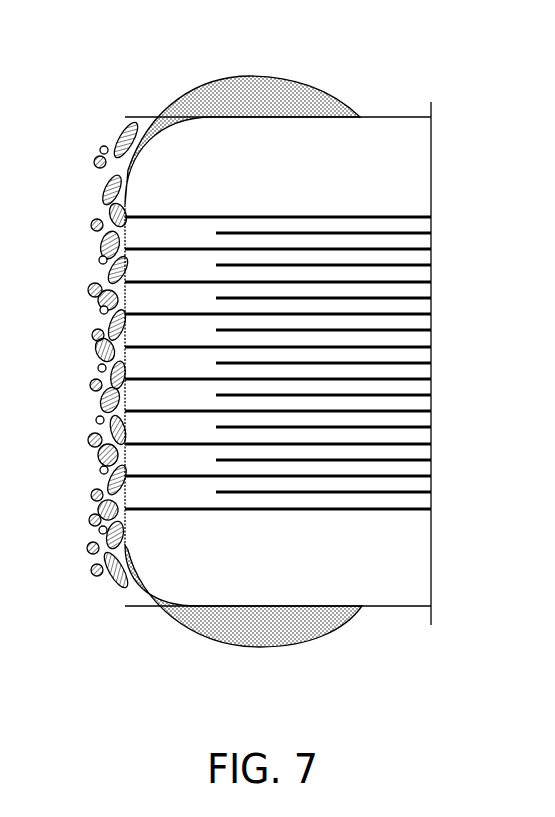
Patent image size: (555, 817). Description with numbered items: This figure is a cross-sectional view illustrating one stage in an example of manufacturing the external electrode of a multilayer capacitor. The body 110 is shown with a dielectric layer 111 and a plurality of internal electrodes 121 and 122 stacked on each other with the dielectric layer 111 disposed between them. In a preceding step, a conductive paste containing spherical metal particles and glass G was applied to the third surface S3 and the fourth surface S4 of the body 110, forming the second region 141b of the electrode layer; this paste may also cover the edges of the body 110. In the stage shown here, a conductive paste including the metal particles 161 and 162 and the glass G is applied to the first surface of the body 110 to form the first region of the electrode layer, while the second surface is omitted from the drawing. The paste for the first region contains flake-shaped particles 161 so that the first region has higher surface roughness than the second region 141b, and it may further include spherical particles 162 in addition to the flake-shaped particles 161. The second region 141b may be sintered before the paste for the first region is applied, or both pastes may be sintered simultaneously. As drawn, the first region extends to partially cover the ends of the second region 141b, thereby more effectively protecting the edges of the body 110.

The body 110 is at (400, 117).
The dielectric layer 111 is at (432, 224).
The internal electrode 121 is at (403, 215).
The internal electrode 122 is at (403, 236).
The second region 141b is at (240, 100).
The flake-shaped particle 161 is at (122, 580).
The spherical particle 162 is at (90, 550).
The glass G is at (101, 492).
The third surface S3 is at (372, 116).
The fourth surface S4 is at (381, 607).